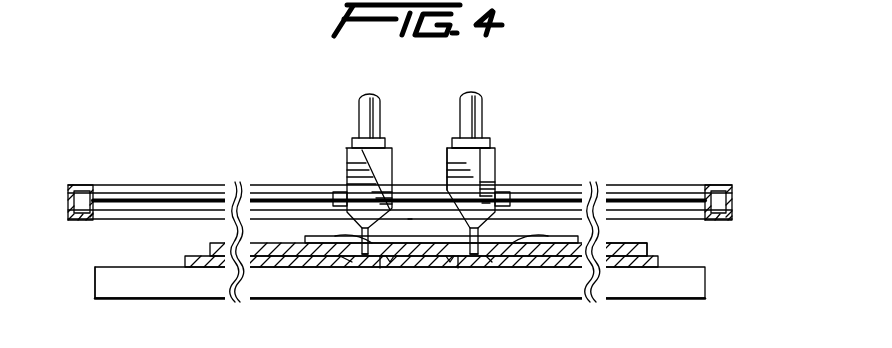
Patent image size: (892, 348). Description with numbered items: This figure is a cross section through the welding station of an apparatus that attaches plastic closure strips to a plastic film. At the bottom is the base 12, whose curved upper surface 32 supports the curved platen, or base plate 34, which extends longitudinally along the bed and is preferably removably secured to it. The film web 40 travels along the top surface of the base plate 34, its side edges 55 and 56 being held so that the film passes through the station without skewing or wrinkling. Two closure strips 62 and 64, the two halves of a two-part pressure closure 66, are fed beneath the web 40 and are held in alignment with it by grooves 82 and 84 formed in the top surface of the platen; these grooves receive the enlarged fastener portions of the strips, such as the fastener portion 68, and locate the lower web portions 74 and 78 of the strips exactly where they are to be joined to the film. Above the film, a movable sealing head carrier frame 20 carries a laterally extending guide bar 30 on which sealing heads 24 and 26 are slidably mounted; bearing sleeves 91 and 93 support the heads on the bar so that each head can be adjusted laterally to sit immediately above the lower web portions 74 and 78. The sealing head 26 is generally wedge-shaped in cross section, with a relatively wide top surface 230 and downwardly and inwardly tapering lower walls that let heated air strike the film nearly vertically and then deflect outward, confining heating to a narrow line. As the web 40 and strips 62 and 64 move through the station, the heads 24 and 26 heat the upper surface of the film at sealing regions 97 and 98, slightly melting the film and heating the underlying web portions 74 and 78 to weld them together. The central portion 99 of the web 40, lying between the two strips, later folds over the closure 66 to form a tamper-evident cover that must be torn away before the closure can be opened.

The base 12 is at (698, 286).
The sealing head carrier frame 20 is at (708, 172).
The sealing head 24 is at (390, 150).
The sealing head 26 is at (497, 165).
The guide bar 30 is at (638, 202).
The curved upper surface 32 is at (118, 270).
The base plate 34 is at (658, 262).
The film web 40 is at (260, 243).
The side edge 55 is at (210, 250).
The side edge 56 is at (635, 245).
The closure strip 62 is at (368, 272).
The closure strip 64 is at (472, 272).
The closure 66 is at (390, 262).
The fastener portion 68 is at (450, 262).
The lower web portion 74 is at (352, 262).
The lower web portion 78 is at (490, 262).
The groove 82 is at (380, 262).
The groove 84 is at (458, 262).
The bearing sleeve 91 is at (341, 186).
The bearing sleeve 93 is at (441, 190).
The sealing region 97 is at (350, 242).
The sealing region 98 is at (490, 247).
The central portion 99 is at (410, 232).
The top surface 230 is at (482, 143).